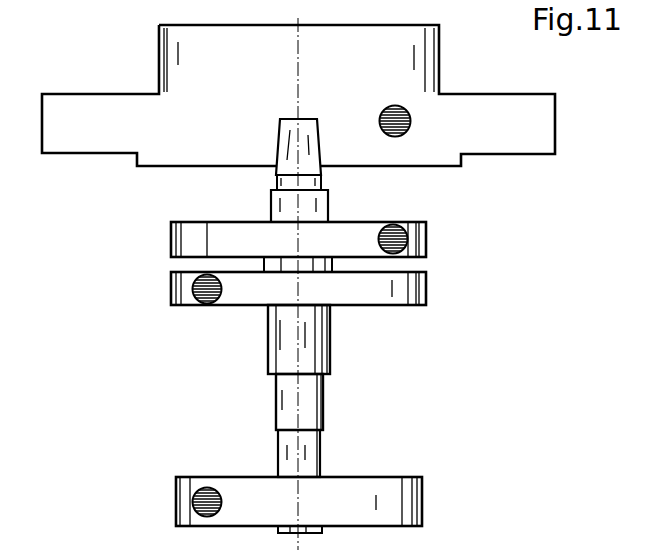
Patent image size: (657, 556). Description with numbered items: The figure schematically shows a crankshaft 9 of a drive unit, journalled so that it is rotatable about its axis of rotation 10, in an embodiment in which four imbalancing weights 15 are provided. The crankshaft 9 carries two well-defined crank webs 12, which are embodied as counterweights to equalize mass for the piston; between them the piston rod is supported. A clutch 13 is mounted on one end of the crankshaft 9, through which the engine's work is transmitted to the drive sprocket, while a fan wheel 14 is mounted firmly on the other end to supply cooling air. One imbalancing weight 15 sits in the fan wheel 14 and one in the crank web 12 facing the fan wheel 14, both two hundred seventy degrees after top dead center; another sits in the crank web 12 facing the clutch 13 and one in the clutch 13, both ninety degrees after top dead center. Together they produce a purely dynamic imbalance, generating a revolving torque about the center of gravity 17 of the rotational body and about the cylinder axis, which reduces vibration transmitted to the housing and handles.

The crankshaft 9 is at (323, 354).
The axis of rotation 10 is at (298, 406).
The crank webs 12 is at (192, 239).
The clutch 13 is at (397, 499).
The fan wheel 14 is at (186, 79).
The imbalancing weights 15 is at (403, 107).
The center of gravity 17 is at (299, 318).